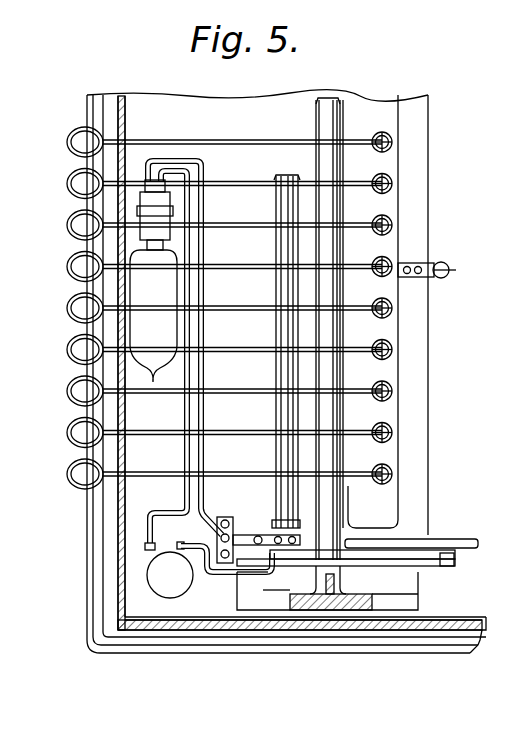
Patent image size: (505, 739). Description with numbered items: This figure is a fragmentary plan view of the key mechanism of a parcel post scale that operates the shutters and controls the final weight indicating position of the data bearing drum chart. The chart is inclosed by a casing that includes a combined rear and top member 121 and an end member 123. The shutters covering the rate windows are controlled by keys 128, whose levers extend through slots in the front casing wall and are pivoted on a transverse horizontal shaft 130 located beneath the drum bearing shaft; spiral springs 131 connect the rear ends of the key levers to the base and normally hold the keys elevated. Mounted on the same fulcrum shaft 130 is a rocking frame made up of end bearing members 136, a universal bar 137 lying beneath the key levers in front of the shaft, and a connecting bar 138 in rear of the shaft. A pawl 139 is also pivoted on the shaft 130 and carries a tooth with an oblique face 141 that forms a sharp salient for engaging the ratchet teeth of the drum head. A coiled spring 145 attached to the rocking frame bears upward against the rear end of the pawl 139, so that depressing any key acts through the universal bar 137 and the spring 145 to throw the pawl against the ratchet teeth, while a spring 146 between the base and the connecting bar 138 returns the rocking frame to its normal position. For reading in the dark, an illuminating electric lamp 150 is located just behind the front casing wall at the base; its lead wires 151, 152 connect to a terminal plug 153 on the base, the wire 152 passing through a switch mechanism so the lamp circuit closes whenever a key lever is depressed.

The combined rear and top member 121 is at (118, 522).
The end member 123 is at (205, 625).
The keys 128 is at (78, 391).
The transverse horizontal shaft 130 is at (332, 102).
The spiral springs 131 is at (394, 440).
The end bearing members 136 is at (360, 542).
The universal bar 137 is at (298, 448).
The connecting bar 138 is at (425, 339).
The pawl 139 is at (380, 558).
The oblique face 141 is at (447, 558).
The spring 145 is at (468, 540).
The spring 146 is at (444, 262).
The illuminating electric lamp 150 is at (136, 286).
The lead wire 151 is at (192, 213).
The lead wire 152 is at (203, 200).
The terminal plug 153 is at (152, 578).